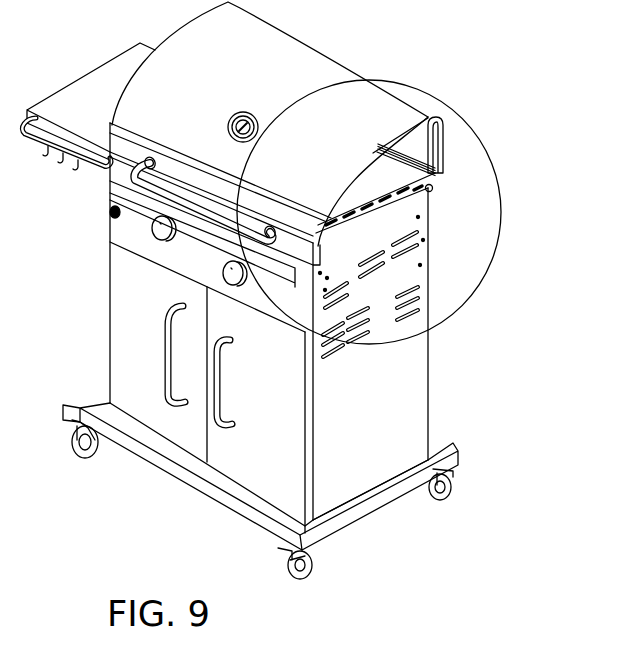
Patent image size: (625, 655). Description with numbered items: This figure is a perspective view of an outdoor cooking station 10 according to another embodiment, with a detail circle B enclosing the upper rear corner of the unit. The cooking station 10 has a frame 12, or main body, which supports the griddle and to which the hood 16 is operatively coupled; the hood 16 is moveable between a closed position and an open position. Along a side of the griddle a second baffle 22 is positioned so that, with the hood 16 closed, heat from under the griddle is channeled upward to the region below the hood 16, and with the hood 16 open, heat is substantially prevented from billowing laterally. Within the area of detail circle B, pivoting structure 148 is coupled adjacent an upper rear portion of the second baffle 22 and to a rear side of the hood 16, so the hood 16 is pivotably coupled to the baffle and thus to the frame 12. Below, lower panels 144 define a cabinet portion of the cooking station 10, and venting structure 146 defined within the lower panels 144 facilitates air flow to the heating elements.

The outdoor cooking station 10 is at (468, 60).
The frame 12 is at (430, 268).
The hood 16 is at (323, 48).
The second baffle 22 is at (430, 201).
The lower panels 144 is at (410, 382).
The venting structure 146 is at (325, 360).
The pivoting structure 148 is at (434, 187).
The detail circle B is at (501, 222).